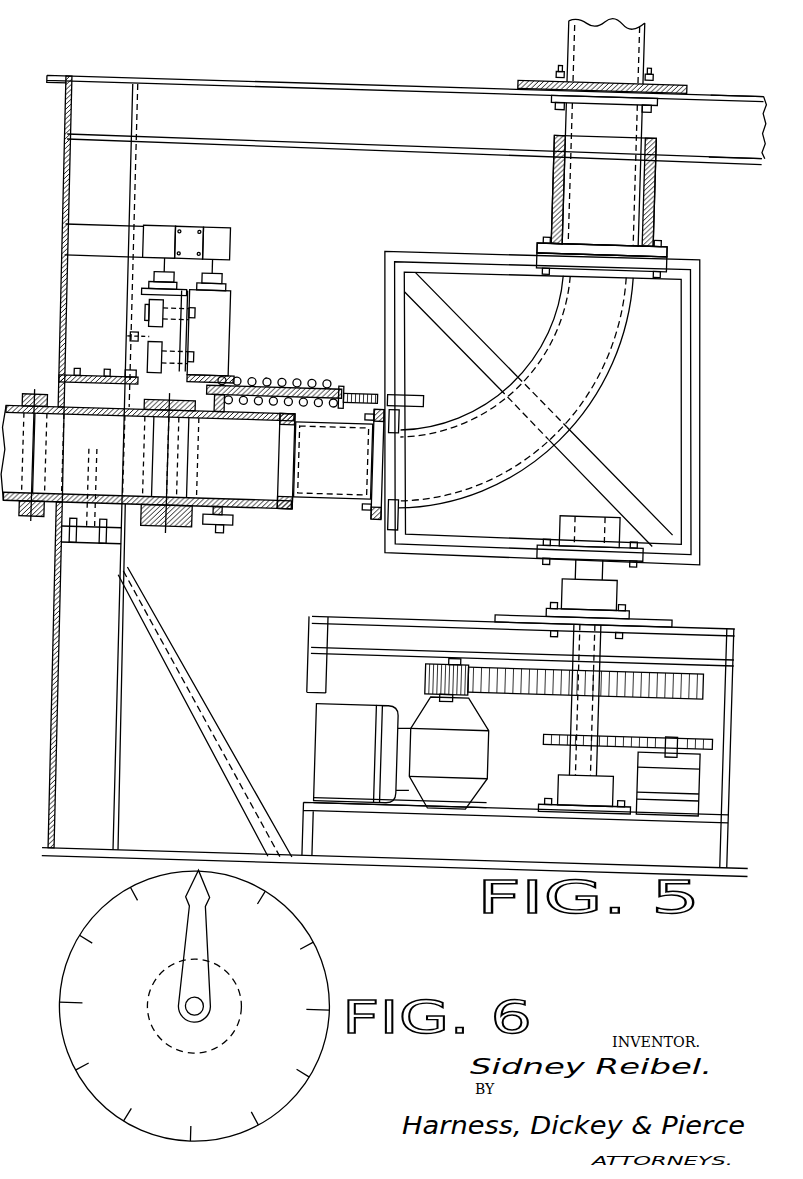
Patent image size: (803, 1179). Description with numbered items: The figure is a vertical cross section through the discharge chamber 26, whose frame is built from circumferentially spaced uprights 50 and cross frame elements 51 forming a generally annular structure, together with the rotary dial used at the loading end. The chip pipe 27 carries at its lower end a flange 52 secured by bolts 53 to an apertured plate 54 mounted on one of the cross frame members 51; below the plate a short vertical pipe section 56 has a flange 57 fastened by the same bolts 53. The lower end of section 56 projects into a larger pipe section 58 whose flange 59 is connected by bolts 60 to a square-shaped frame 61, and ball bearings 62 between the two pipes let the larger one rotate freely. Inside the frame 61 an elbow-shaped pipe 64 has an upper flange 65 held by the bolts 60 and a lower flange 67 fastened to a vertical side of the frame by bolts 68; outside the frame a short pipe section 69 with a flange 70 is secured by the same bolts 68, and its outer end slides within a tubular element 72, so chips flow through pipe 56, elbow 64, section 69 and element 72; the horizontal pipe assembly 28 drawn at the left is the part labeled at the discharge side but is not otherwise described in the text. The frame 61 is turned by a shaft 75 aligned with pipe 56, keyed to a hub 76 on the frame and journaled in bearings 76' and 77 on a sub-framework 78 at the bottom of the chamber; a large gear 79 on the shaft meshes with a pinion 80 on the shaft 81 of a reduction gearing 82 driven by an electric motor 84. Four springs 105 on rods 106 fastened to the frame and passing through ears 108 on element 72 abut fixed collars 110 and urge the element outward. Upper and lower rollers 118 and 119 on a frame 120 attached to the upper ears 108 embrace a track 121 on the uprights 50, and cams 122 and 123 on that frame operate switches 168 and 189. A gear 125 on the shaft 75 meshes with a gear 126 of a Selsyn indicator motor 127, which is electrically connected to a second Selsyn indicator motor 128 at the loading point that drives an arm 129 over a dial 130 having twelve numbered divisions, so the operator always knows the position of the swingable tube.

In FIG. 5, the discharge chamber 26 is at (361, 80).
In FIG. 5, the pipe 27 is at (630, 33).
In FIG. 5, the horizontal pipe 28 is at (307, 492).
In FIG. 5, the uprights 50 is at (130, 188).
In FIG. 5, the cross frame elements 51 is at (723, 86).
In FIG. 5, the flange 52 is at (660, 77).
In FIG. 5, the bolts 53 is at (545, 68).
In FIG. 5, the apertured plate 54 is at (650, 91).
In FIG. 5, the short vertical pipe section 56 is at (638, 124).
In FIG. 5, the flange 57 is at (545, 101).
In FIG. 5, the larger pipe section 58 is at (662, 240).
In FIG. 5, the flange 59 is at (663, 252).
In FIG. 5, the bolts 60 is at (642, 225).
In FIG. 5, the square-shaped frame 61 is at (699, 258).
In FIG. 5, the ball bearings 62 is at (650, 160).
In FIG. 5, the elbow-shaped pipe 64 is at (585, 408).
In FIG. 5, the flange 65 is at (632, 282).
In FIG. 5, the flange 67 is at (400, 520).
In FIG. 5, the bolts 68 is at (376, 522).
In FIG. 5, the short pipe section 69 is at (330, 484).
In FIG. 5, the flange 70 is at (398, 438).
In FIG. 5, the tubular element 72 is at (286, 514).
In FIG. 5, the shaft 75 is at (608, 565).
In FIG. 5, the hub 76 is at (601, 521).
In FIG. 5, the bearing 76' is at (568, 789).
In FIG. 5, the bearing 77 is at (625, 596).
In FIG. 5, the sub-framework 78 is at (702, 620).
In FIG. 5, the large gear 79 is at (630, 690).
In FIG. 5, the pinion 80 is at (430, 675).
In FIG. 5, the shaft 81 is at (462, 699).
In FIG. 5, the reduction gearing 82 is at (492, 736).
In FIG. 5, the electric motor 84 is at (362, 714).
In FIG. 5, the springs 105 is at (308, 382).
In FIG. 5, the rods 106 is at (339, 388).
In FIG. 5, the ears 108 is at (235, 393).
In FIG. 5, the fixed collars 110 is at (360, 395).
In FIG. 5, the upper rollers 118 is at (145, 318).
In FIG. 5, the lower rollers 119 is at (124, 380).
In FIG. 5, the frame 120 is at (215, 310).
In FIG. 5, the track 121 is at (145, 350).
In FIG. 5, the cam 122 is at (220, 284).
In FIG. 5, the cam 123 is at (150, 284).
In FIG. 5, the gear 125 is at (626, 730).
In FIG. 5, the gear 126 is at (700, 720).
In FIG. 5, the Selsyn indicator motor 127 is at (684, 806).
In FIG. 6, the Selsyn indicator motor 128 is at (178, 979).
In FIG. 6, the arm 129 is at (222, 950).
In FIG. 6, the dial 130 is at (341, 968).
In FIG. 5, the switch 168 is at (218, 250).
In FIG. 5, the switch 189 is at (158, 234).